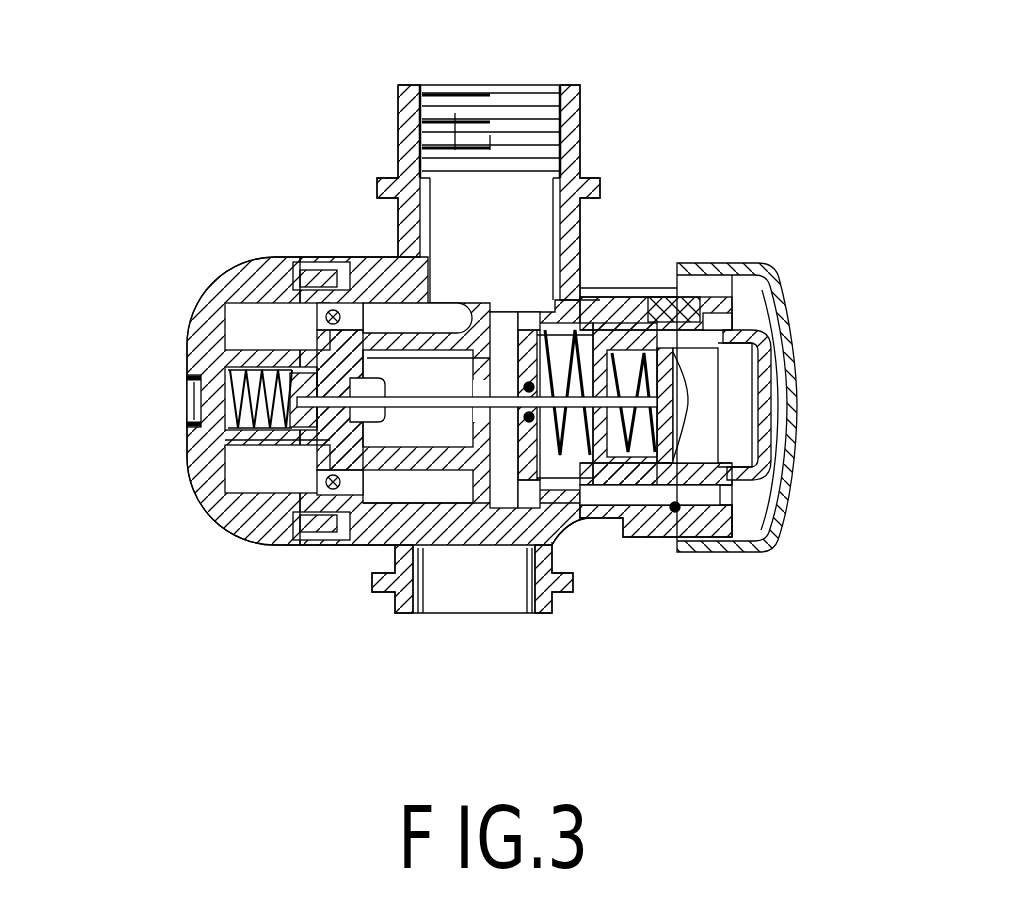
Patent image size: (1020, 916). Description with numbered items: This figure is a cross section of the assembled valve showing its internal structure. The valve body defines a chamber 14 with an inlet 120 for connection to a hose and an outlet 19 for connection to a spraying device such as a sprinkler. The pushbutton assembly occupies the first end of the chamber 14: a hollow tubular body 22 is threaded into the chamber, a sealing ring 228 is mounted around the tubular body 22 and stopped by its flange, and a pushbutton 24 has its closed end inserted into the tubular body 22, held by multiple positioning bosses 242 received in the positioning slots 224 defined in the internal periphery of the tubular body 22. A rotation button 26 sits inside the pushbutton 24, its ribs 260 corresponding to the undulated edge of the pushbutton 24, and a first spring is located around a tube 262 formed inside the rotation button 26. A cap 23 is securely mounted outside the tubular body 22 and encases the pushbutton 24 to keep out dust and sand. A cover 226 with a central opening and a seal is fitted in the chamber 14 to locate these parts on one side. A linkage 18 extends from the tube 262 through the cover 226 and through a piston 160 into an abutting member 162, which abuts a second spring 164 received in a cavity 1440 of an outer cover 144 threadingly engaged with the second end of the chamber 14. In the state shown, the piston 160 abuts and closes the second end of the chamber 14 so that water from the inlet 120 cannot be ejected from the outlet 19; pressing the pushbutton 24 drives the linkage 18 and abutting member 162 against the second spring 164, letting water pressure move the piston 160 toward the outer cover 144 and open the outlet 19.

The chamber 14 is at (413, 360).
The linkage 18 is at (418, 612).
The outlet 19 is at (546, 86).
The hollow tubular body 22 is at (770, 550).
The cap 23 is at (773, 282).
The pushbutton 24 is at (772, 440).
The rotation button 26 is at (667, 370).
The inlet 120 is at (422, 403).
The outer cover 144 is at (215, 293).
The piston 160 is at (323, 463).
The abutting member 162 is at (187, 377).
The second spring 164 is at (227, 408).
The projection 224 is at (663, 305).
The cover 226 is at (517, 490).
The sealing ring 228 is at (675, 512).
The positioning bosses 242 is at (632, 320).
The ribs 260 is at (603, 345).
The tube 262 is at (620, 463).
The cavity 1440 is at (262, 455).